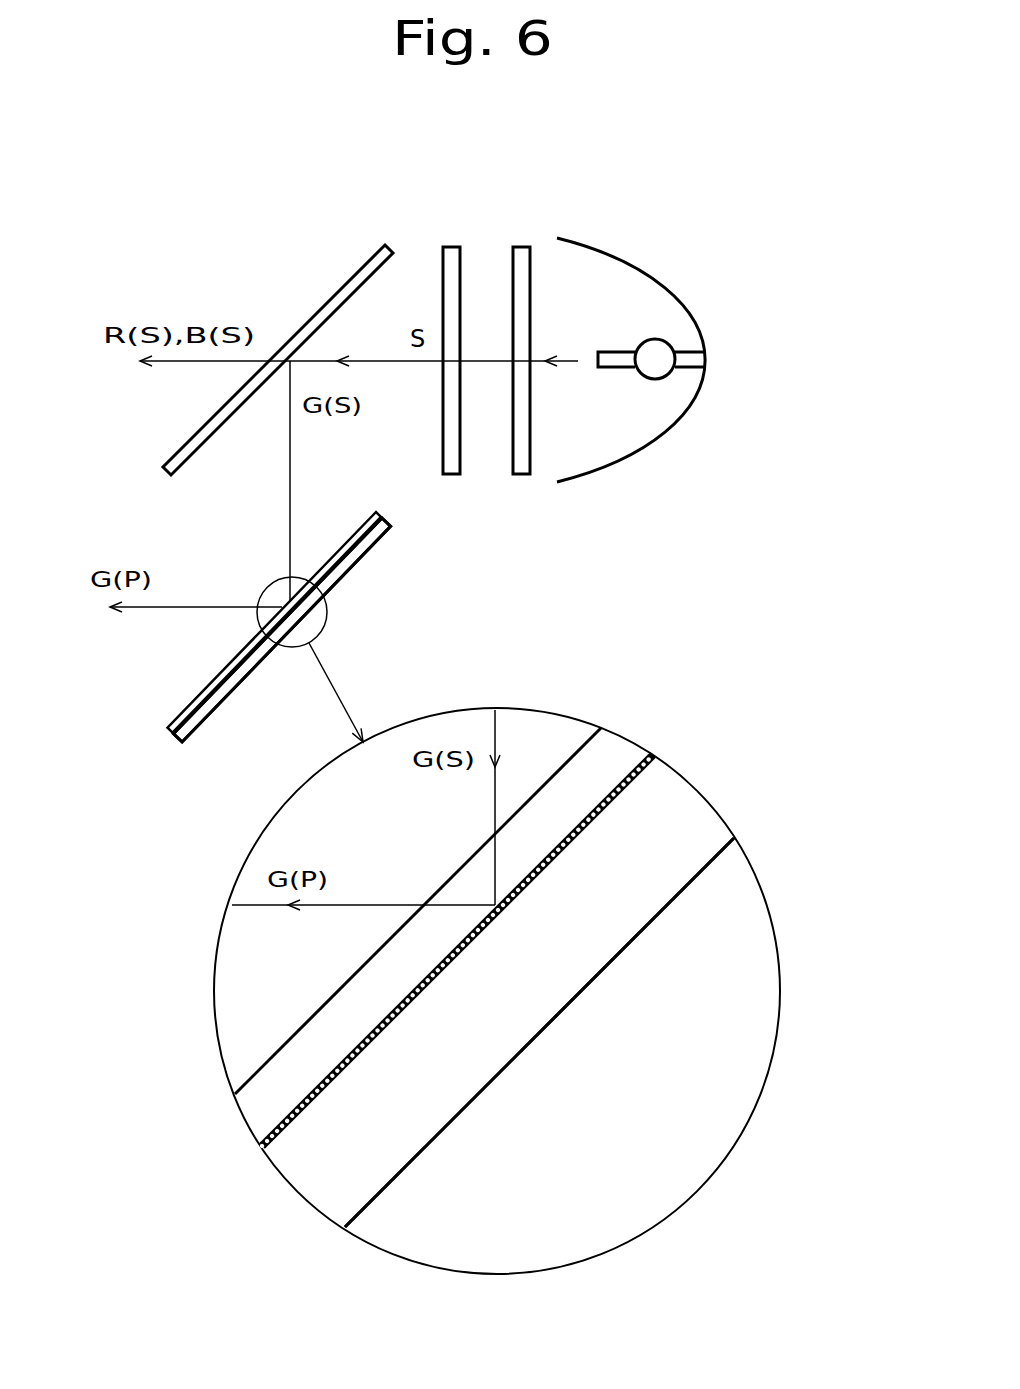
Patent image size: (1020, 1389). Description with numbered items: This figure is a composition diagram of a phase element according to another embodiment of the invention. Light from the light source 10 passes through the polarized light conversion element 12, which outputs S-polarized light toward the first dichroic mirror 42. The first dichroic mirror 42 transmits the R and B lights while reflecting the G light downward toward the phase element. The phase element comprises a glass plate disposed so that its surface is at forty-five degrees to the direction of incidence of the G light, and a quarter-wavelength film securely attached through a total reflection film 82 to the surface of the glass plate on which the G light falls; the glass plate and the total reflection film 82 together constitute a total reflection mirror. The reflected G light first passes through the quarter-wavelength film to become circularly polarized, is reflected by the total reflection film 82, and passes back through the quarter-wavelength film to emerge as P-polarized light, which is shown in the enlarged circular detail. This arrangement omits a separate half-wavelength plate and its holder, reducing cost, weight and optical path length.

The light source 10 is at (608, 253).
The polarized light conversion element 12 is at (537, 241).
The first dichroic mirror 42 is at (360, 280).
The total reflection film 82 is at (262, 1148).